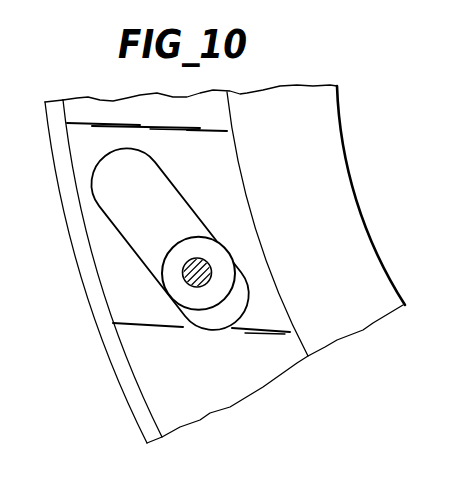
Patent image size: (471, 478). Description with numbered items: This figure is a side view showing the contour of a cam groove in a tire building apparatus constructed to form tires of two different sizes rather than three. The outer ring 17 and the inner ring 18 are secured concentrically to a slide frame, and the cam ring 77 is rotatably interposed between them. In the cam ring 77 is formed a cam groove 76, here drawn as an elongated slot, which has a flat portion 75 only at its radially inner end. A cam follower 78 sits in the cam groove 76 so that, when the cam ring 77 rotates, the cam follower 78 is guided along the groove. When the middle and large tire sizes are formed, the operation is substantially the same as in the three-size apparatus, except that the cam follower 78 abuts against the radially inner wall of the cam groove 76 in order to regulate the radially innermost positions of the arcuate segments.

The outer ring 17 is at (97, 317).
The inner ring 18 is at (347, 211).
The flat portion 75 is at (188, 311).
The cam groove 76 is at (160, 184).
The cam ring 77 is at (231, 188).
The cam follower 78 is at (218, 256).